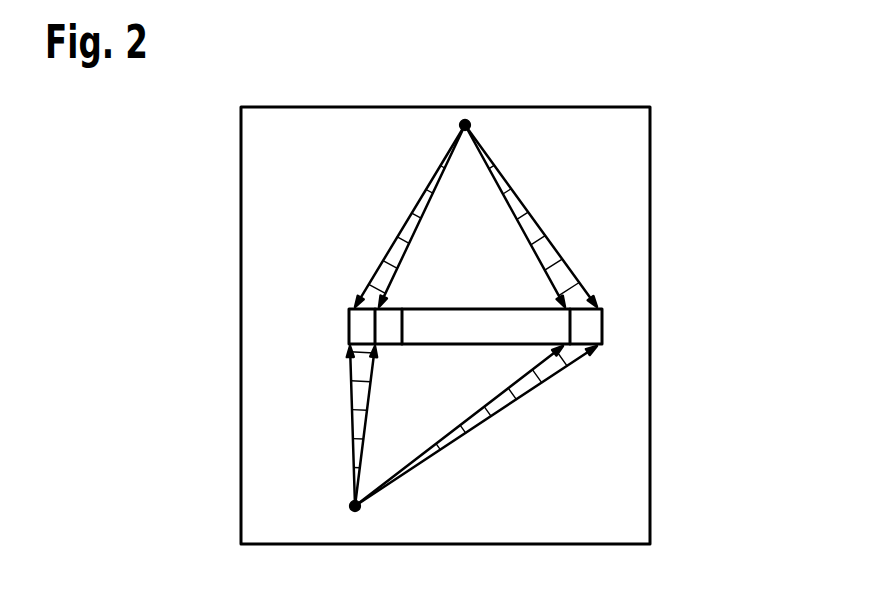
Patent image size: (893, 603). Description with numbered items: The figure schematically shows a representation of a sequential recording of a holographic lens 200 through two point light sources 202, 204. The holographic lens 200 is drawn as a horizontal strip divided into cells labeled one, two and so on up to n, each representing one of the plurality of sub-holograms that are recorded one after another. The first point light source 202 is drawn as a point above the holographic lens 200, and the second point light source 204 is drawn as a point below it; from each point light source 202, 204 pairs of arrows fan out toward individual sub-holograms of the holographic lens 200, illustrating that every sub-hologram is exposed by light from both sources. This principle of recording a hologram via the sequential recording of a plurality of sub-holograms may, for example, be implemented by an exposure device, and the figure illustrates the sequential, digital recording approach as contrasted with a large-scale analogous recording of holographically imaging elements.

The holographic lens 200 is at (386, 322).
The point light source 202 is at (467, 125).
The point light source 204 is at (355, 506).